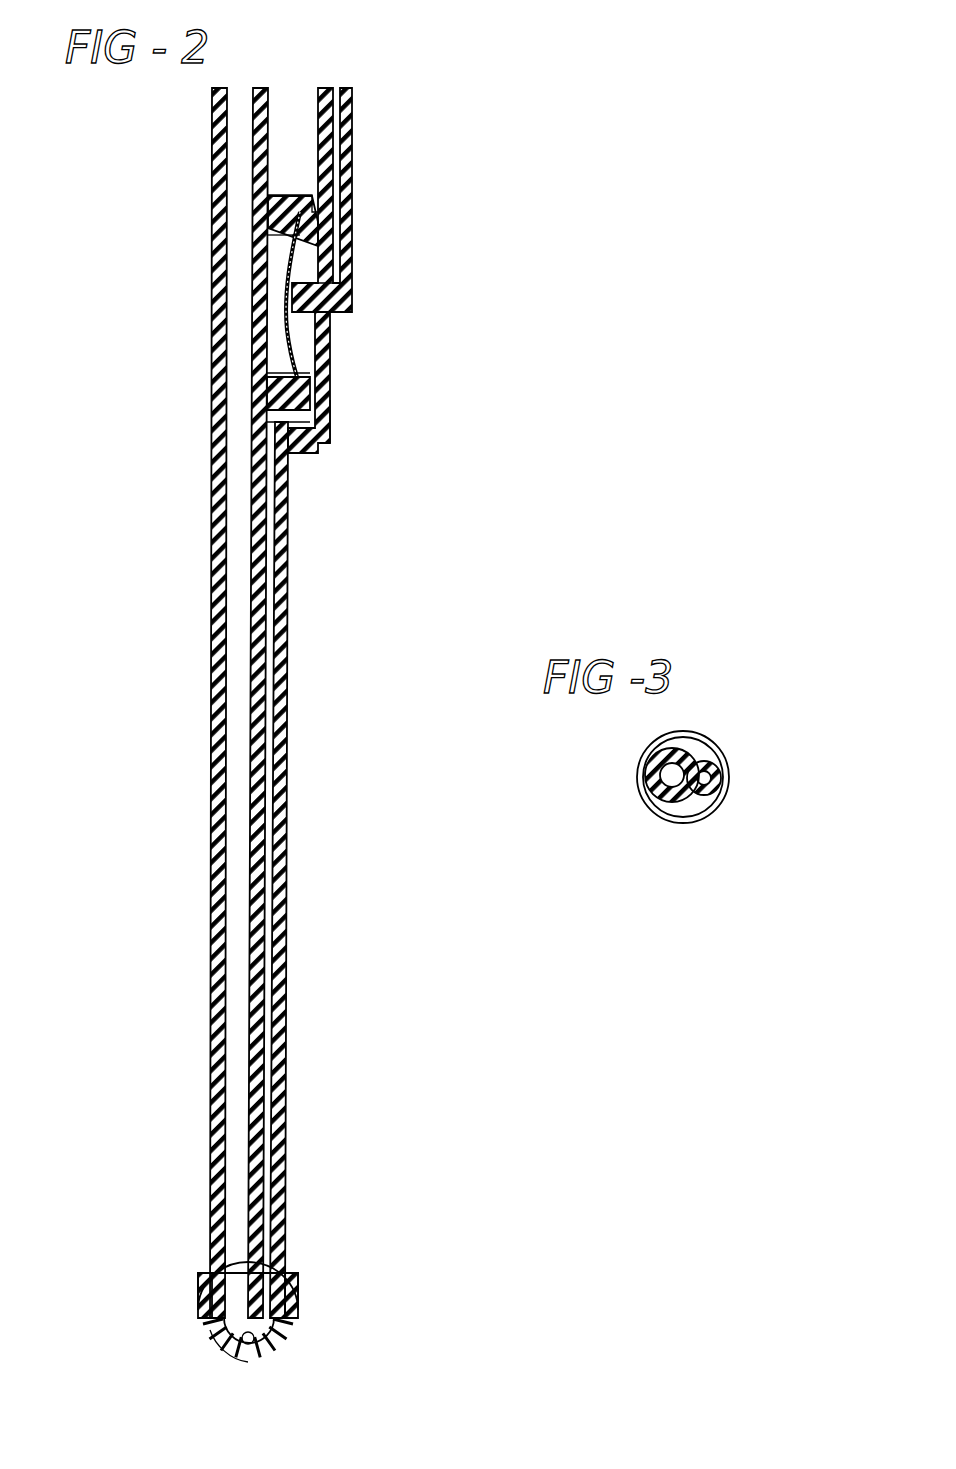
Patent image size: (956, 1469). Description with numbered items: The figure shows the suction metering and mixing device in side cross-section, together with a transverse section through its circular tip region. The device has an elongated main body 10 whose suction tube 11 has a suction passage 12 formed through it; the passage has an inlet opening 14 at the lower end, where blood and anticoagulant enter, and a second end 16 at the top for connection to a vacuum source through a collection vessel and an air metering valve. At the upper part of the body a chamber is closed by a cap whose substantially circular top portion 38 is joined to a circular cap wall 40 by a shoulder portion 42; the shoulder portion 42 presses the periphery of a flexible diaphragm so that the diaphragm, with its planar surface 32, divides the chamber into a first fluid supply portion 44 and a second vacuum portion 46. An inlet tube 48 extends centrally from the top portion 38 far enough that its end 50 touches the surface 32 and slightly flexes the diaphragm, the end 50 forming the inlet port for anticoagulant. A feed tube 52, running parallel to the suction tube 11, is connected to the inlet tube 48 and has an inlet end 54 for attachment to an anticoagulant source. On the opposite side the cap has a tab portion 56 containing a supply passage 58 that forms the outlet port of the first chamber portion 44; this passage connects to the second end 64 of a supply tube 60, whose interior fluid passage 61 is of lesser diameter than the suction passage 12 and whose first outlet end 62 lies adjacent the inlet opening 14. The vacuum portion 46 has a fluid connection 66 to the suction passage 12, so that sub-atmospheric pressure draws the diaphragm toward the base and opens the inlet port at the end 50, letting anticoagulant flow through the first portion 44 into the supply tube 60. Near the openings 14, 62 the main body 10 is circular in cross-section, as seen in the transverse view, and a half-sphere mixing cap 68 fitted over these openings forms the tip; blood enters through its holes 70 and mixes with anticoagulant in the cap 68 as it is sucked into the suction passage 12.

In FIG. 2, the main body 10 is at (205, 688).
In FIG. 2, the suction tube 11 is at (210, 575).
In FIG. 3, the suction tube 11 is at (668, 765).
In FIG. 2, the suction passage 12 is at (235, 1225).
In FIG. 3, the suction passage 12 is at (648, 788).
In FIG. 2, the inlet opening 14 is at (210, 1328).
In FIG. 2, the second end 16 is at (240, 88).
In FIG. 2, the planar surface 32 is at (340, 258).
In FIG. 2, the top portion 38 is at (325, 363).
In FIG. 2, the cap wall 40 is at (291, 195).
In FIG. 2, the shoulder portion 42 is at (273, 422).
In FIG. 2, the first fluid supply portion 44 is at (303, 338).
In FIG. 2, the second vacuum portion 46 is at (273, 272).
In FIG. 2, the inlet tube 48 is at (320, 285).
In FIG. 2, the end 50 is at (283, 307).
In FIG. 2, the feed tube 52 is at (353, 138).
In FIG. 2, the inlet end 54 is at (343, 89).
In FIG. 2, the tab portion 56 is at (328, 413).
In FIG. 2, the supply passage 58 is at (313, 390).
In FIG. 2, the supply tube 60 is at (280, 1196).
In FIG. 3, the supply tube 60 is at (713, 790).
In FIG. 2, the interior fluid passage 61 is at (267, 1115).
In FIG. 2, the first outlet end 62 is at (282, 1325).
In FIG. 2, the second end 64 is at (328, 437).
In FIG. 2, the fluid connection 66 is at (262, 236).
In FIG. 2, the mixing cap 68 is at (297, 1303).
In FIG. 3, the mixing cap 68 is at (717, 757).
In FIG. 2, the holes 70 is at (253, 1360).